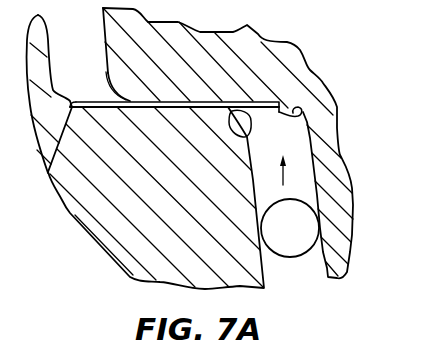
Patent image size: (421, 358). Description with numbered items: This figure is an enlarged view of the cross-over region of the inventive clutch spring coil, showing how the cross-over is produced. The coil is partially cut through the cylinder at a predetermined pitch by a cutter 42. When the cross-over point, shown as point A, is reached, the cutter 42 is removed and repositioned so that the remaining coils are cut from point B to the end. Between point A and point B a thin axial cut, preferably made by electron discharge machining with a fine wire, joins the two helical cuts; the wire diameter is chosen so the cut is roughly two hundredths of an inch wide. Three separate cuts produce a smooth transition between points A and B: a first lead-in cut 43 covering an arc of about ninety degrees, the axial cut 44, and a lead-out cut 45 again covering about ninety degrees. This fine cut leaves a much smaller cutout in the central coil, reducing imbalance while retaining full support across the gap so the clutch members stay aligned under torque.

The cutter 42 is at (290, 254).
The first lead-in cut 43 is at (247, 140).
The axial cut 44 is at (181, 101).
The lead-out cut 45 is at (106, 72).
The cross-over point A is at (318, 108).
The point B is at (48, 172).